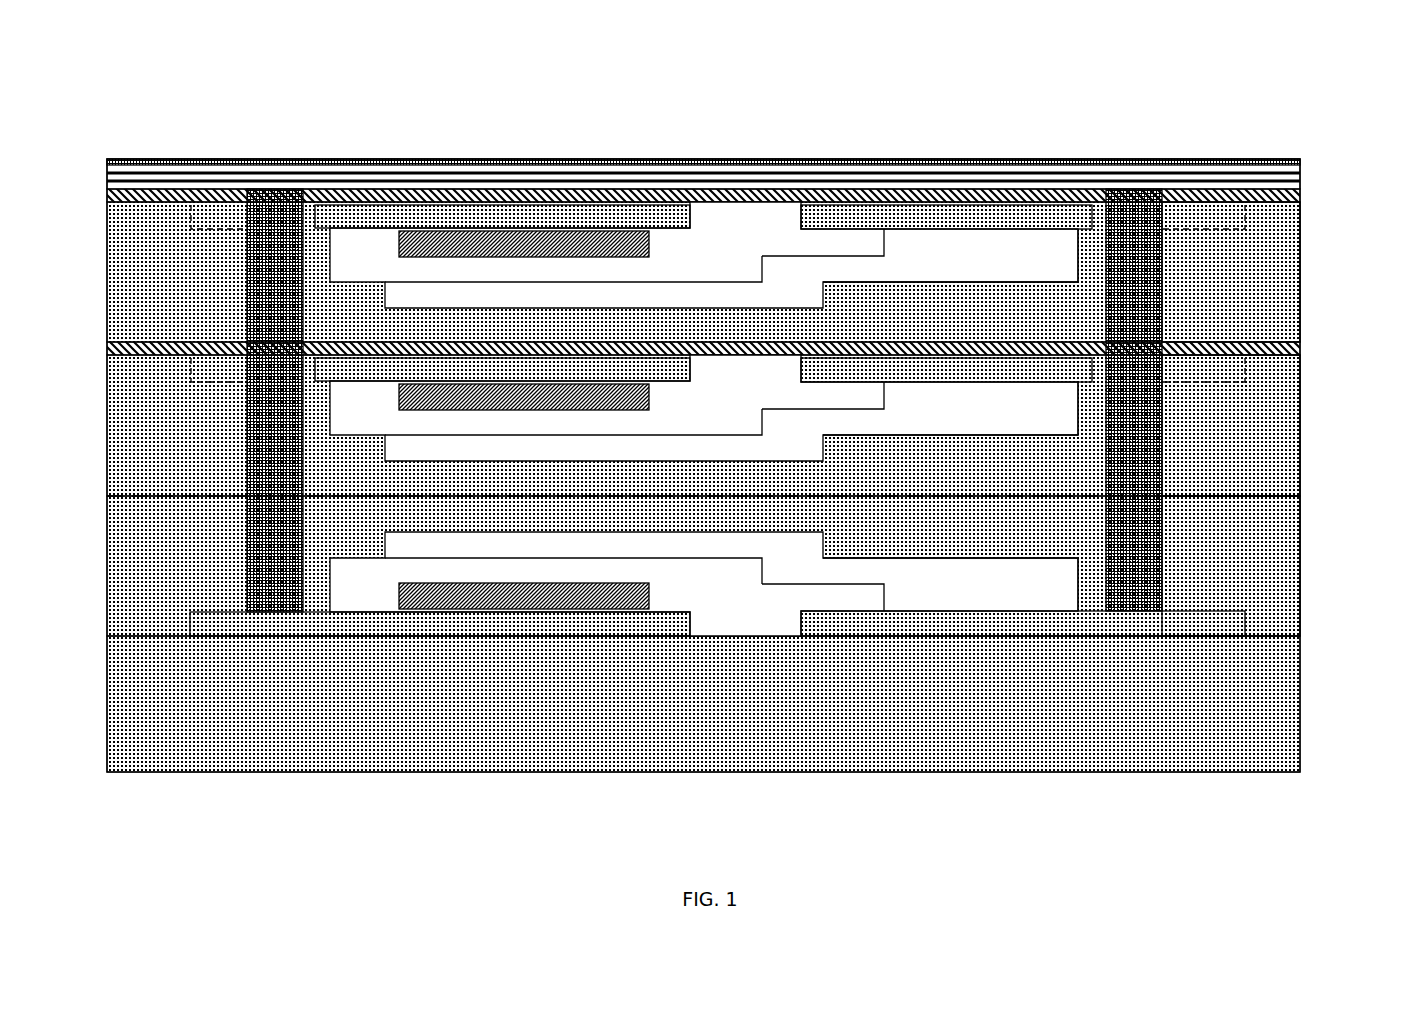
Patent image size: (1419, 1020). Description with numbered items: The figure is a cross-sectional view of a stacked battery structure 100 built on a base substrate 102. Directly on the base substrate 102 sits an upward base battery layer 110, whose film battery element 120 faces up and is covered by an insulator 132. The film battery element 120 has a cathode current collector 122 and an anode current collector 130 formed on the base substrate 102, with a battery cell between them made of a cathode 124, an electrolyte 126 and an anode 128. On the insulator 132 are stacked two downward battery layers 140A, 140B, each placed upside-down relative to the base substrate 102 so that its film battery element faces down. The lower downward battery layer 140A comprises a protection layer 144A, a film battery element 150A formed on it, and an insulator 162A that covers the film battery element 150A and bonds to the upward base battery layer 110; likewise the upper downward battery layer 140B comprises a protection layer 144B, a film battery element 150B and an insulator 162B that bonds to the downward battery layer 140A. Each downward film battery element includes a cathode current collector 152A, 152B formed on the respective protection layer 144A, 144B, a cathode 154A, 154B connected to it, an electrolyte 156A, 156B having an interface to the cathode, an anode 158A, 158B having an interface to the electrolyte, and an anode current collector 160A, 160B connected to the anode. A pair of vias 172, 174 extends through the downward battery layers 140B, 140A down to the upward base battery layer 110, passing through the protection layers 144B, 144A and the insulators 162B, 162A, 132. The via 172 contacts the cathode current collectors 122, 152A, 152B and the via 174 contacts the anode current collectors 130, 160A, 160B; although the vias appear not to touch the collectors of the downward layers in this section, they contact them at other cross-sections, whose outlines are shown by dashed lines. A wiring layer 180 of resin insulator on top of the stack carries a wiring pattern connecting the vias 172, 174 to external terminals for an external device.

The stacked battery structure 100 is at (717, 406).
The base substrate 102 is at (685, 715).
The upward base battery layer 110 is at (1313, 497).
The film battery element 120 is at (717, 568).
The cathode current collector 122 is at (419, 634).
The cathode 124 is at (502, 606).
The electrolyte 126 is at (685, 600).
The anode 128 is at (957, 600).
The anode current collector 130 is at (1004, 634).
The insulator 132 is at (1214, 577).
The downward battery layer 140A is at (1313, 348).
The downward battery layer 140B is at (1313, 194).
The protection layer 144A is at (107, 346).
The protection layer 144B is at (107, 193).
The film battery element 150A is at (703, 420).
The film battery element 150B is at (703, 266).
The cathode current collector 152A is at (479, 381).
The cathode current collector 152B is at (479, 228).
The cathode 154A is at (497, 406).
The cathode 154B is at (497, 253).
The electrolyte 156A is at (676, 418).
The electrolyte 156B is at (676, 265).
The anode 158A is at (946, 418).
The anode 158B is at (946, 265).
The anode current collector 160A is at (936, 381).
The anode current collector 160B is at (936, 228).
The insulator 162A is at (1208, 435).
The insulator 162B is at (1208, 282).
The via 172 is at (255, 411).
The via 174 is at (1114, 411).
The wiring layer 180 is at (1313, 160).